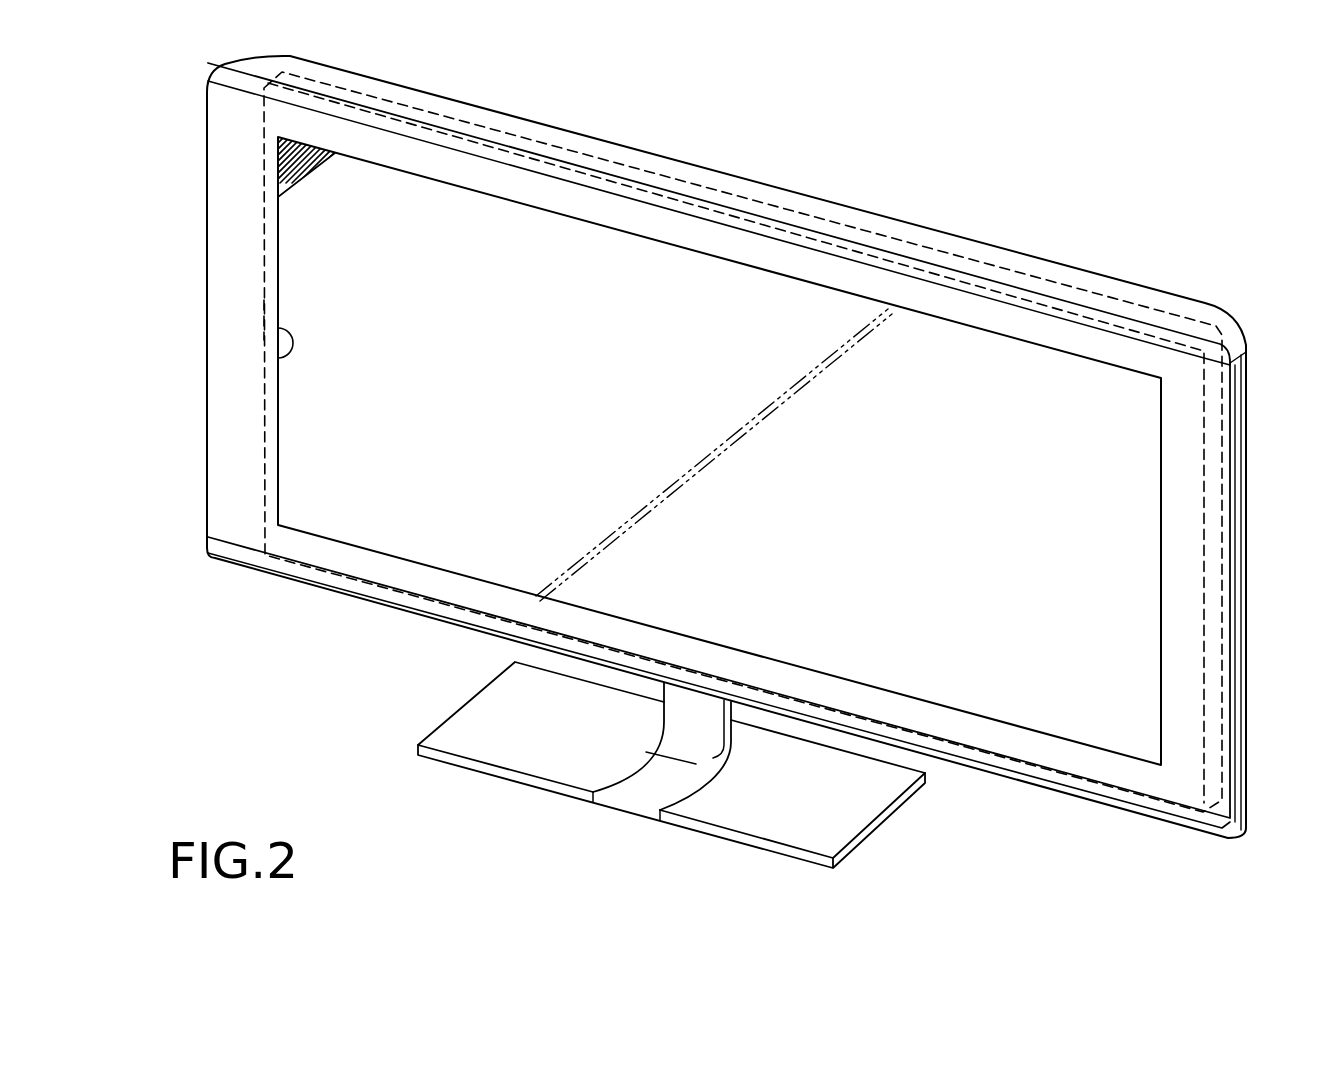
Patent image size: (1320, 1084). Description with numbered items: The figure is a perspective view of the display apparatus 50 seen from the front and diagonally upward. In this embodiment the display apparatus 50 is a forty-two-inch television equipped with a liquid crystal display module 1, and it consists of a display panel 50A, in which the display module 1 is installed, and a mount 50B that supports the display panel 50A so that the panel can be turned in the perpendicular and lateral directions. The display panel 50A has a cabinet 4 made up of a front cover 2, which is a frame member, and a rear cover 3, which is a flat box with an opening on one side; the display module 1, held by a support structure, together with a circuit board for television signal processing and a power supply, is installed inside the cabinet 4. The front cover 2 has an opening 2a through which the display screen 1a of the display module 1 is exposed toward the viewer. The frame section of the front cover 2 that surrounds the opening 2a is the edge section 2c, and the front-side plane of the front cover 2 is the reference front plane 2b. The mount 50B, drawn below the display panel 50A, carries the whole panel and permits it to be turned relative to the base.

The display apparatus 50 is at (923, 127).
The display panel 50A is at (325, 628).
The mount 50B is at (435, 712).
The display module 1 is at (262, 487).
The display screen 1a is at (310, 400).
The front cover 2 is at (1013, 313).
The opening 2a is at (277, 358).
The reference front plane 2b is at (230, 310).
The edge section 2c is at (230, 258).
The rear cover 3 is at (1147, 287).
The cabinet 4 is at (1128, 200).